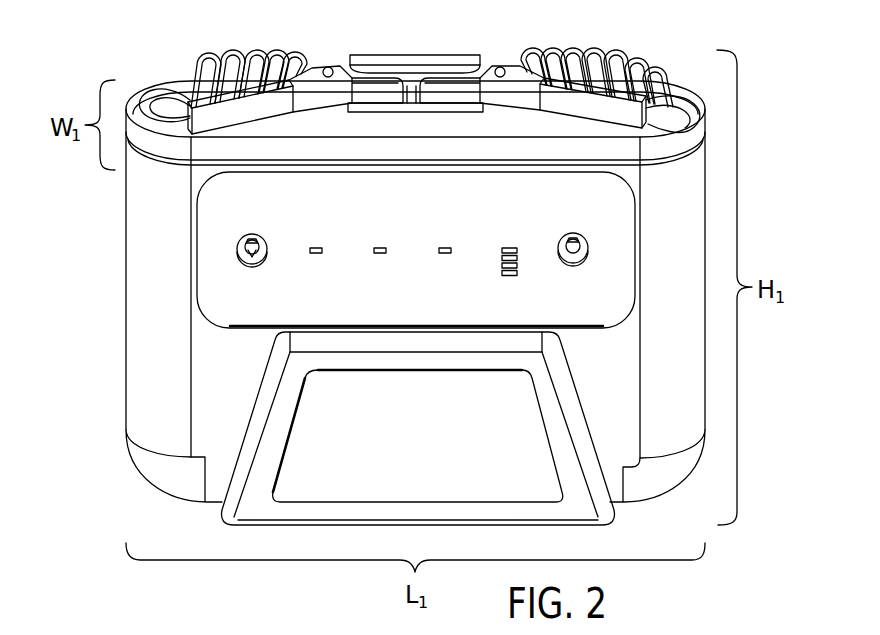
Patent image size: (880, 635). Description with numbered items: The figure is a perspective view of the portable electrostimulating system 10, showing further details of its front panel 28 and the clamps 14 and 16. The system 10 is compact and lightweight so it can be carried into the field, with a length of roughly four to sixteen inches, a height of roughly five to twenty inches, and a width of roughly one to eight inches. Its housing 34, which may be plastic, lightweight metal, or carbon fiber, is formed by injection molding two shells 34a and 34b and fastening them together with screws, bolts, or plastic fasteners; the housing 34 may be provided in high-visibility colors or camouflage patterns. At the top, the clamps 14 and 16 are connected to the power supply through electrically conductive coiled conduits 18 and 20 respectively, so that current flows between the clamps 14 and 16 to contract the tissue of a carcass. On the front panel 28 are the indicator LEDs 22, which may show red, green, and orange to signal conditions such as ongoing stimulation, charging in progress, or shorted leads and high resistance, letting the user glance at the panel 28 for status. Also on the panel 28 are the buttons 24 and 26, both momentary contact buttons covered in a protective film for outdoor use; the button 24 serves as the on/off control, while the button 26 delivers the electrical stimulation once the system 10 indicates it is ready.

The portable electrostimulation system 10 is at (410, 262).
The clamp 14 is at (213, 113).
The clamp 16 is at (627, 118).
The coiled conduit 18 is at (257, 57).
The coiled conduit 20 is at (572, 55).
The indicator LEDs 22 is at (517, 237).
The button 24 is at (237, 246).
The button 26 is at (587, 248).
The front panel 28 is at (617, 315).
The housing 34 is at (125, 273).
The shell 34a is at (142, 410).
The shell 34b is at (688, 95).